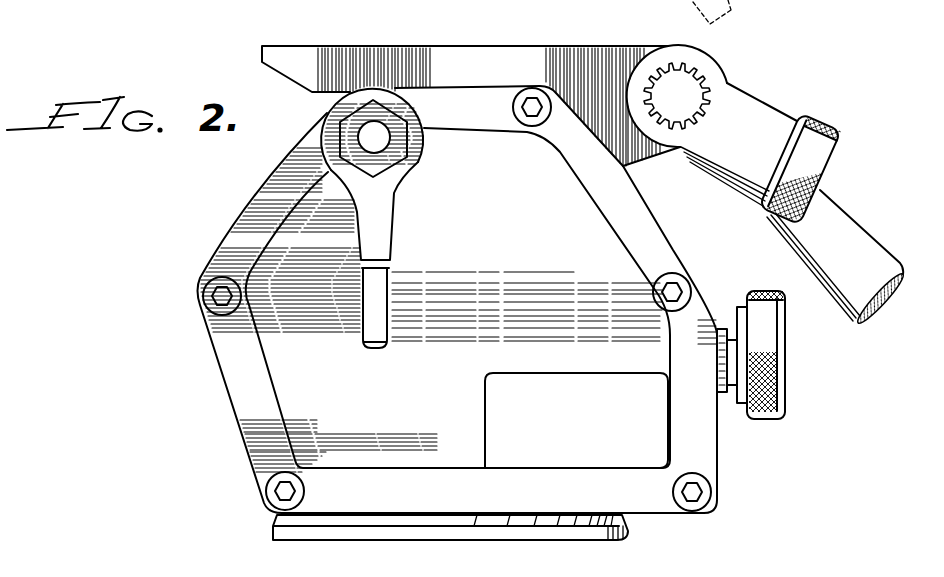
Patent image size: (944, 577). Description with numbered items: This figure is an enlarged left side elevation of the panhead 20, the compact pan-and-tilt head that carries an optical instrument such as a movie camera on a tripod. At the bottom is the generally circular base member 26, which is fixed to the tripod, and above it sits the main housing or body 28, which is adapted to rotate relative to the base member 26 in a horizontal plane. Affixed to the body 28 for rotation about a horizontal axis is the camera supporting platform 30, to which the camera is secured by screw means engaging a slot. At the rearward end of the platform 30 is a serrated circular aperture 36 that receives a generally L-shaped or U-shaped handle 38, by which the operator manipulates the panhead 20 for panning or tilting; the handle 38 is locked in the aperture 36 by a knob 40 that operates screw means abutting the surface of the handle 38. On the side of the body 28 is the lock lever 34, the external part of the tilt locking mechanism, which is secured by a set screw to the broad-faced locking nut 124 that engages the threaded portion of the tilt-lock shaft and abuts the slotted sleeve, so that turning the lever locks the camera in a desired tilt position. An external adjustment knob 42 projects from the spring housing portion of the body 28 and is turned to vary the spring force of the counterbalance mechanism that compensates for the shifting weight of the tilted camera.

The panhead 20 is at (168, 207).
The base member 26 is at (410, 527).
The main housing or body 28 is at (238, 374).
The camera supporting platform 30 is at (335, 50).
The lock lever 34 is at (385, 222).
The serrated circular aperture 36 is at (708, 95).
The handle 38 is at (843, 232).
The knob 40 is at (817, 152).
The external adjustment knob 42 is at (772, 357).
The locking nut 124 is at (402, 159).